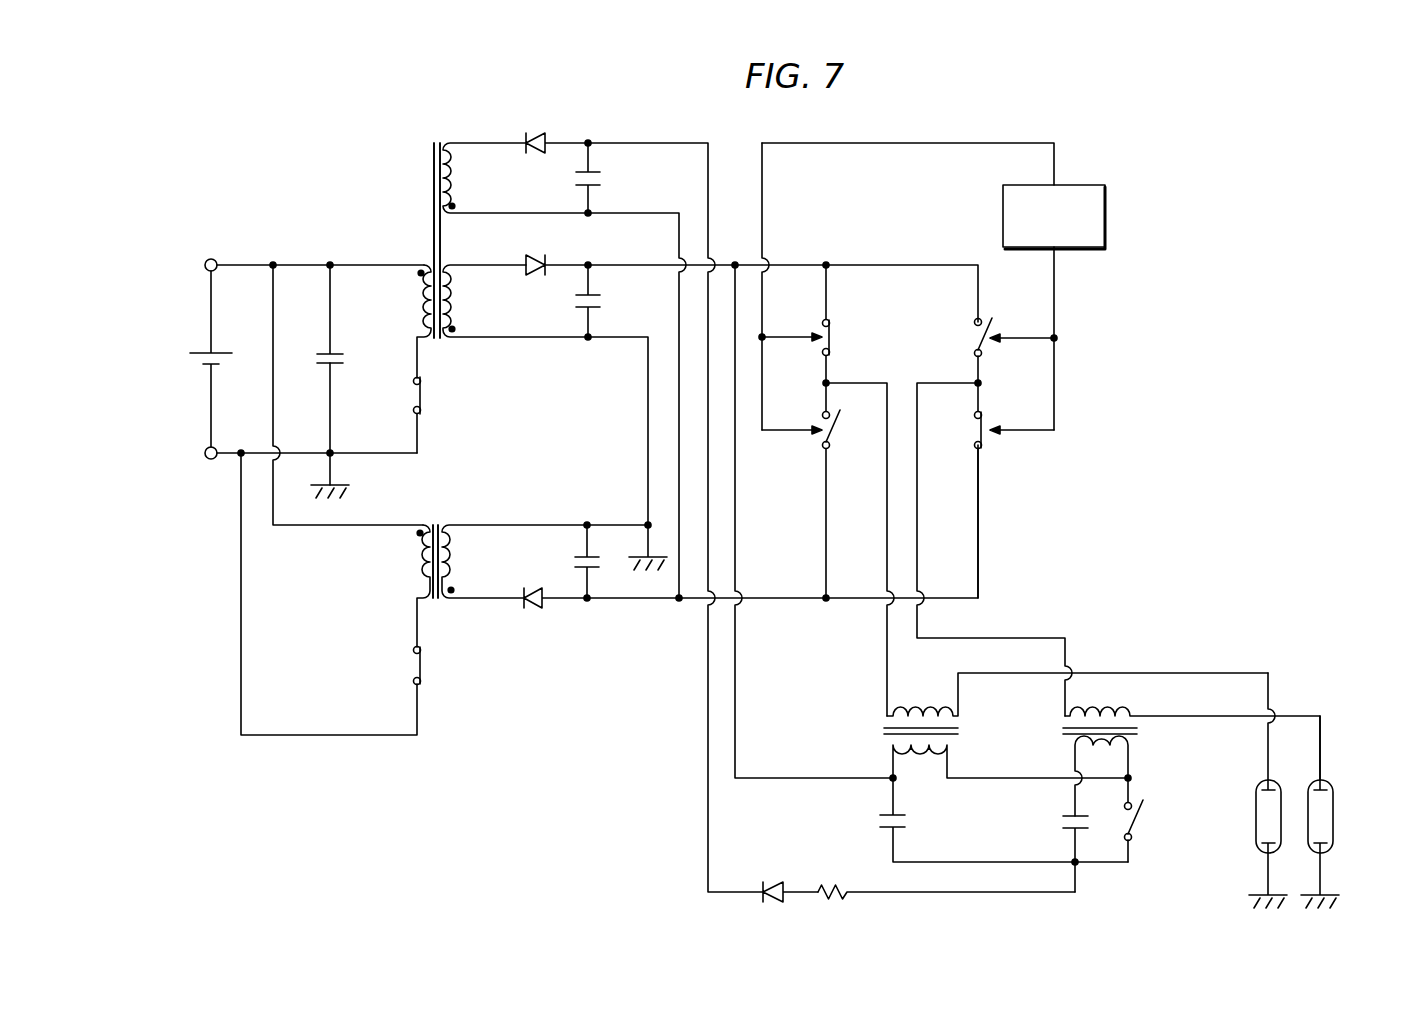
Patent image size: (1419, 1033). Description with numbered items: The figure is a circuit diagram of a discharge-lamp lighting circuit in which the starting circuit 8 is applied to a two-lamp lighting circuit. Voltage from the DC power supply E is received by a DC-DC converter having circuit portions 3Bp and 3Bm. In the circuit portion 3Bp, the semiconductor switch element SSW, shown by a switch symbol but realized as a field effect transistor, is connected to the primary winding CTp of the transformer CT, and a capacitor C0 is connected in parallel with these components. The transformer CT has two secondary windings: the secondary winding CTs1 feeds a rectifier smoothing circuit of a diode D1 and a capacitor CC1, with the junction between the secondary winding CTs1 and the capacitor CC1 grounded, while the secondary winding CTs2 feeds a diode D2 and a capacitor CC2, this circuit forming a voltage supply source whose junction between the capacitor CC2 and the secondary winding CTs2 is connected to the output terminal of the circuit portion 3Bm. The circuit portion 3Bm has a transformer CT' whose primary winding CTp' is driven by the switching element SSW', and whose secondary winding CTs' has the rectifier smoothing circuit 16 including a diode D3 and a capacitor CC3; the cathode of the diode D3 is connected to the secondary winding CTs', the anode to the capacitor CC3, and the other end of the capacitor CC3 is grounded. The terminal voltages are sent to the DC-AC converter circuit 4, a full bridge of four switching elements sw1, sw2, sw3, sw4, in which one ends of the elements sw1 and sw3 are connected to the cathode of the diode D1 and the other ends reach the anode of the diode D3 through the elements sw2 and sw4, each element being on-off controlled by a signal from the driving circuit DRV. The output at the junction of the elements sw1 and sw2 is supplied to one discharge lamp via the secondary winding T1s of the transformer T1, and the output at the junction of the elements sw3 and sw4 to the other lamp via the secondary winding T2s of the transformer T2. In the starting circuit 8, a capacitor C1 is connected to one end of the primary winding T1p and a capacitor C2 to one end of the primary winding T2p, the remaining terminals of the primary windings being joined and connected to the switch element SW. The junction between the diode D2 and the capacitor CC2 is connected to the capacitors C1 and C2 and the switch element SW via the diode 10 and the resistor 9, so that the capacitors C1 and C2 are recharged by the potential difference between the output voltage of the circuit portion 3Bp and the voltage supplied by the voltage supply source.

The DC power supply E is at (205, 352).
The capacitor C0 is at (322, 353).
The primary winding CTp is at (404, 301).
The secondary winding CTs1 is at (480, 255).
The secondary winding CTs2 is at (478, 130).
The transformer CT is at (450, 254).
The semiconductor switch element SSW is at (441, 415).
The circuit portion 3Bp is at (483, 268).
The diode D1 is at (541, 259).
The diode D2 is at (529, 131).
The capacitor CC1 is at (576, 302).
The capacitor CC2 is at (576, 180).
The primary winding CTp' is at (404, 564).
The secondary winding CTs' is at (514, 540).
The transformer CT' is at (451, 575).
The switching element SSW' is at (442, 679).
The circuit portion 3Bm is at (482, 594).
The capacitor CC3 is at (576, 562).
The diode D3 is at (529, 612).
The rectifier smoothing circuit 16 is at (593, 520).
The DC-AC converter circuit 4 is at (915, 490).
The semiconductor switching element sw1 is at (816, 324).
The semiconductor switching element sw2 is at (818, 490).
The semiconductor switching element sw3 is at (993, 350).
The semiconductor switching element sw4 is at (1045, 560).
The driving circuit DRV is at (1107, 212).
The starting circuit 8 is at (1110, 744).
The transformer T1 is at (1061, 727).
The secondary winding T1s is at (958, 716).
The primary winding T1p is at (948, 753).
The transformer T2 is at (1177, 761).
The secondary winding T2s is at (1136, 718).
The primary winding T2p is at (1129, 753).
The capacitor C1 is at (880, 821).
The capacitor C2 is at (1062, 821).
The switch element SW is at (1149, 820).
The resistor 9 is at (844, 882).
The diode 10 is at (774, 883).